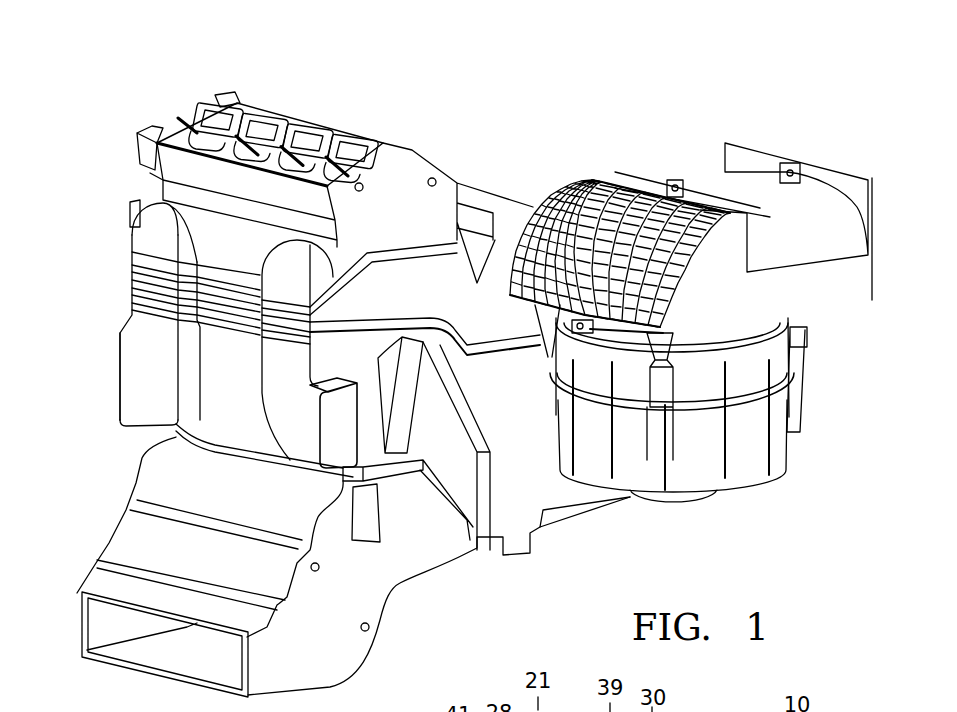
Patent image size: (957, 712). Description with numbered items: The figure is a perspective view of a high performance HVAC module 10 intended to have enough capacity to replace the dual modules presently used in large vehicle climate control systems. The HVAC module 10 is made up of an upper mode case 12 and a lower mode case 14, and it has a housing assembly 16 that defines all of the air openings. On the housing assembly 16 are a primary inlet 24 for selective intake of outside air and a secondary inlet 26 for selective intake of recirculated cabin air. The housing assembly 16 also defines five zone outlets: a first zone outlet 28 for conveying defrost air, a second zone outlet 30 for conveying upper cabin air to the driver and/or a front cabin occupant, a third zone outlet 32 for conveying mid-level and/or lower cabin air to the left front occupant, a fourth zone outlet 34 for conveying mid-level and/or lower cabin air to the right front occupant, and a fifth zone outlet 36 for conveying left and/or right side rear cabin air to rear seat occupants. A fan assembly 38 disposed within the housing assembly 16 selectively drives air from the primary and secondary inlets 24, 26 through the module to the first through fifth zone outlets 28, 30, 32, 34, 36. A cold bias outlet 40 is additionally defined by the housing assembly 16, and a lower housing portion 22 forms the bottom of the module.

The HVAC module 10 is at (184, 87).
The upper mode case 12 is at (113, 323).
The lower mode case 14 is at (89, 562).
The housing assembly 16 is at (511, 200).
The lower housing portion 22 is at (393, 603).
The primary inlet 24 is at (863, 275).
The secondary inlet 26 is at (580, 193).
The first zone outlet 28 is at (333, 140).
The second zone outlet 30 is at (207, 130).
The third zone outlet 32 is at (120, 367).
The fourth zone outlet 34 is at (343, 428).
The fifth zone outlet 36 is at (102, 620).
The fan assembly 38 is at (747, 457).
The cold bias outlet 40 is at (517, 522).